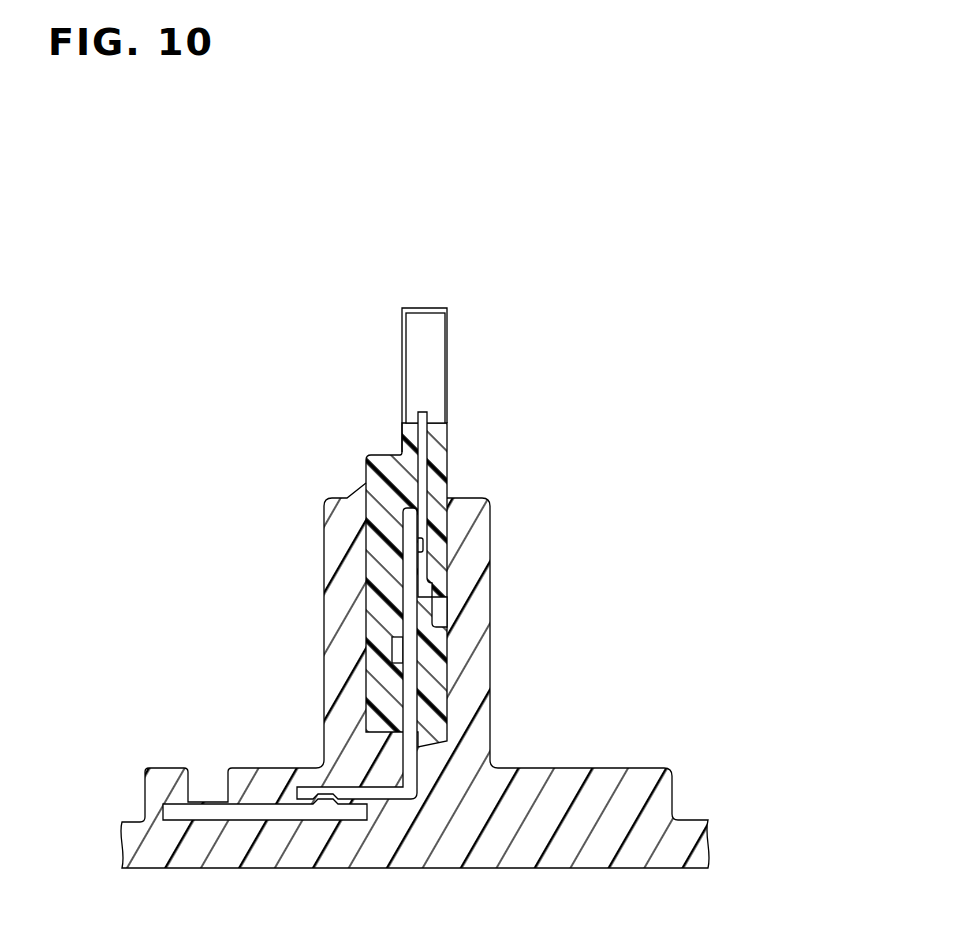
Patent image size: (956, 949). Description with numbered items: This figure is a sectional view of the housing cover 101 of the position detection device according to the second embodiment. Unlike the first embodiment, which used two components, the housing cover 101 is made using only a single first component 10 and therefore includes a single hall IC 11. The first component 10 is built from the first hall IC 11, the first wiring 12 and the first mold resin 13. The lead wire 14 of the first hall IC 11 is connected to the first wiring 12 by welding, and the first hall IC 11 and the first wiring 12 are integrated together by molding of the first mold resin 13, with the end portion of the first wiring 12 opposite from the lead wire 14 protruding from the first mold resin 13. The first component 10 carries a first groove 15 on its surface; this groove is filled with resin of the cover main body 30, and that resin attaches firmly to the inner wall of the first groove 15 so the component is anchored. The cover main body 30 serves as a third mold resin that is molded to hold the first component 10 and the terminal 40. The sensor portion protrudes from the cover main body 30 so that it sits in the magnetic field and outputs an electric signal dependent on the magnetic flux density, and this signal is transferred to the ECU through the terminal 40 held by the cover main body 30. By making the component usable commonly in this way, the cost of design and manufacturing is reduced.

The housing cover 101 is at (487, 245).
The first component 10 is at (385, 538).
The first hall IC 11 is at (437, 355).
The first wiring 12 is at (410, 713).
The first mold resin 13 is at (385, 673).
The lead wire 14 is at (423, 450).
The first groove 15 is at (440, 606).
The cover main body 30 is at (436, 822).
The terminal 40 is at (247, 812).